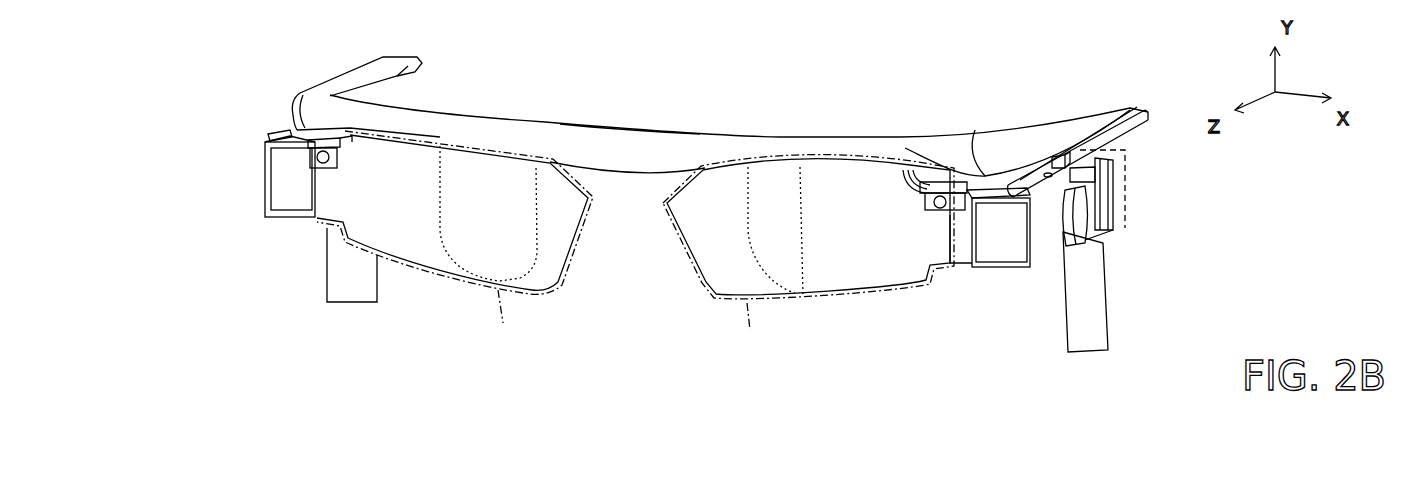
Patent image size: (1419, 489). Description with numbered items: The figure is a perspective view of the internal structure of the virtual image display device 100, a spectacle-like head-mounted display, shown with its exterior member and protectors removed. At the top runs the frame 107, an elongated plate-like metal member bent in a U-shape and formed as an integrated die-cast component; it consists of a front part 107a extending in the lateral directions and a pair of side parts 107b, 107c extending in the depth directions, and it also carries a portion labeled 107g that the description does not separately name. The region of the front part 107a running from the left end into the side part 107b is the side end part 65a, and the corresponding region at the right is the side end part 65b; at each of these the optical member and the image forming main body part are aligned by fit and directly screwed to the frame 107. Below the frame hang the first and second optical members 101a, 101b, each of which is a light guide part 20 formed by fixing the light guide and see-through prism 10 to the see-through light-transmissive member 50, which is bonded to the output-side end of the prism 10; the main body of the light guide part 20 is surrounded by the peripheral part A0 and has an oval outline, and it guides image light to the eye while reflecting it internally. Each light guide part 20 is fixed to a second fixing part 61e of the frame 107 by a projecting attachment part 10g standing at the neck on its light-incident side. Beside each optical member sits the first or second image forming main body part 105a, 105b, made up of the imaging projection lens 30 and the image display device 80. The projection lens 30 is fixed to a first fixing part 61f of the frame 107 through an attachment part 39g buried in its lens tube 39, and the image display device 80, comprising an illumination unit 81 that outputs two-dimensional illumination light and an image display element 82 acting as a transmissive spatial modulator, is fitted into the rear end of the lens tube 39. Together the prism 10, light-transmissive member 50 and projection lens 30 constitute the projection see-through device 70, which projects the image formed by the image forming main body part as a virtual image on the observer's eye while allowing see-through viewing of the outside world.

The virtual image display device 100 is at (707, 202).
The light guide and see-through prism 10 is at (482, 178).
The attachment part 10g is at (320, 138).
The light guide part 20 is at (359, 261).
The projection lens 30 is at (262, 177).
The lens tube 39 is at (1073, 217).
The attachment part 39g is at (1065, 157).
The see-through light-transmissive member 50 is at (550, 248).
The second fixing part 61e is at (347, 127).
The first fixing part 61f is at (270, 137).
The side end part 65a is at (340, 112).
The side end part 65b is at (980, 163).
The projection see-through device 70 is at (621, 271).
The image display device 80 is at (1146, 219).
The illumination unit 81 is at (1130, 183).
The image display element 82 is at (1100, 230).
The first optical member 101a is at (407, 247).
The second optical member 101b is at (843, 273).
The first image forming main body part 105a is at (255, 108).
The second image forming main body part 105b is at (1124, 281).
The frame 107 is at (747, 150).
The front part 107a is at (688, 147).
The side part 107b is at (362, 72).
The side part 107c is at (1105, 125).
The groove of frame 107g is at (628, 147).
The peripheral part A0 is at (628, 325).